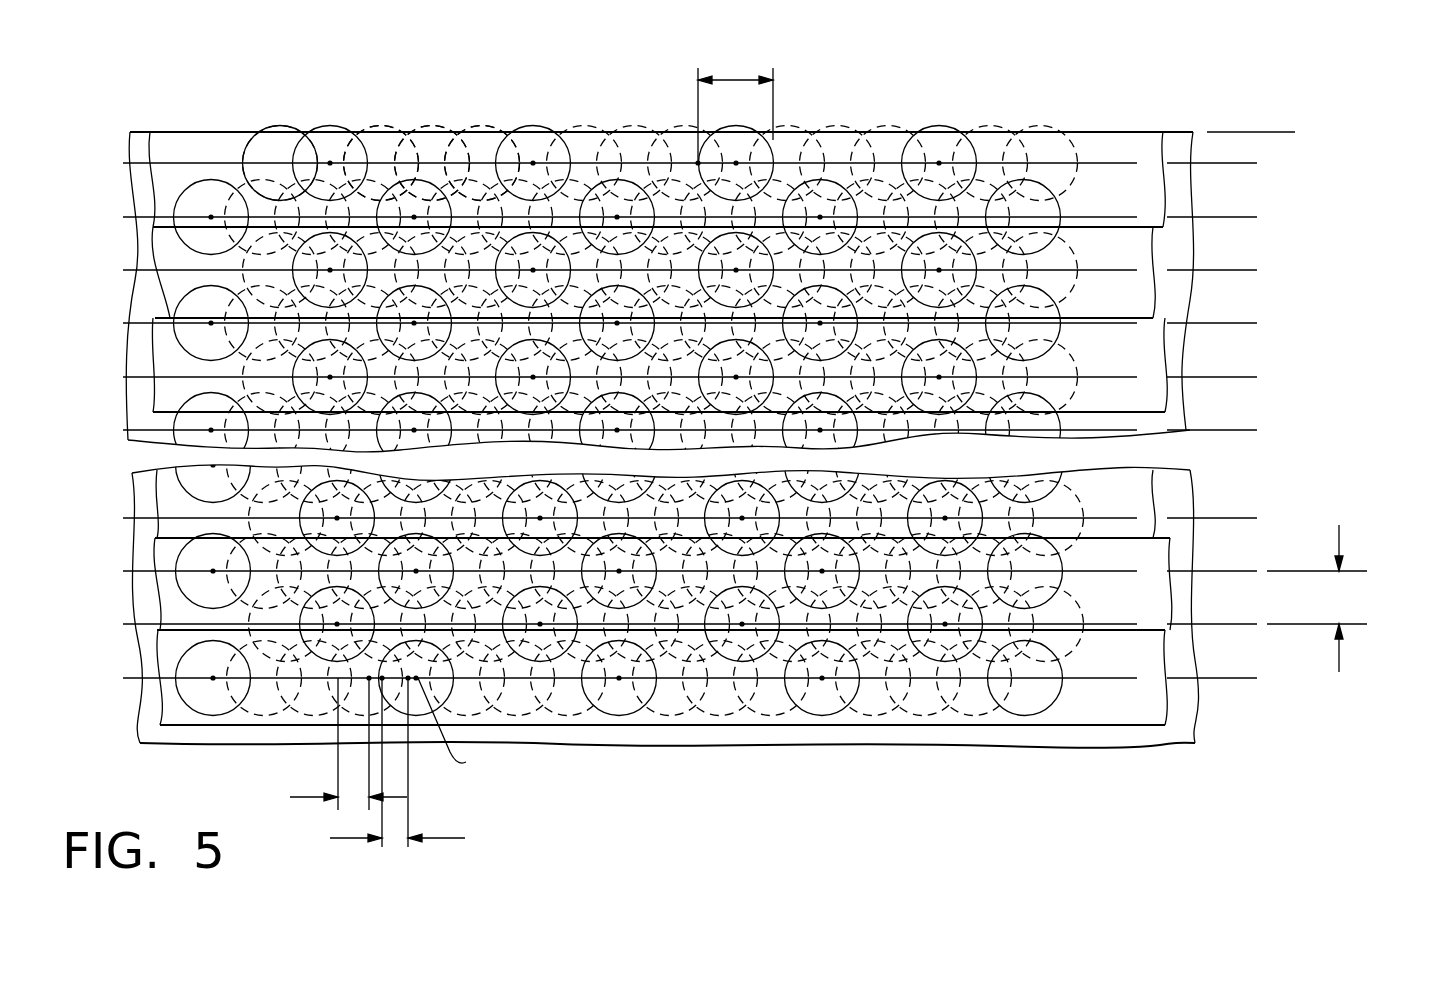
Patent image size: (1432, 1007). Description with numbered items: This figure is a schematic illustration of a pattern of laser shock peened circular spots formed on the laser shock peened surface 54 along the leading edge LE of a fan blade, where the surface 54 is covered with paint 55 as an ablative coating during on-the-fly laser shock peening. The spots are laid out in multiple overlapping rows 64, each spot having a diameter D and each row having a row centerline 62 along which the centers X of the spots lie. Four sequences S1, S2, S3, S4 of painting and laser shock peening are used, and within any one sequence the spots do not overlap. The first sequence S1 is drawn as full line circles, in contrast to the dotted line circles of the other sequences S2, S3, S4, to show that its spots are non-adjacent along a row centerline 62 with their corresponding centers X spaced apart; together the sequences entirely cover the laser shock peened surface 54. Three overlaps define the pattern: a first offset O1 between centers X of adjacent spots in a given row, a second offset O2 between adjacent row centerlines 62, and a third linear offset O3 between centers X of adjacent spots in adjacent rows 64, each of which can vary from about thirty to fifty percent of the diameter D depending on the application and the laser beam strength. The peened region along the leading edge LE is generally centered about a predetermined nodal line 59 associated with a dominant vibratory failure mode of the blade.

The row 64 is at (178, 113).
The nodal line 59 is at (1100, 132).
The row centerline 62 is at (1128, 163).
The laser shock peened surface 54 is at (1190, 727).
The paint 55 is at (1080, 713).
The leading edge LE is at (1265, 132).
The first sequence S1 is at (330, 126).
The second sequence S2 is at (378, 126).
The third sequence S3 is at (430, 126).
The fourth sequence S4 is at (483, 126).
The diameter D is at (735, 78).
The first offset O1 is at (447, 838).
The second offset O2 is at (1339, 540).
The third offset O3 is at (302, 797).
The center X is at (175, 247).